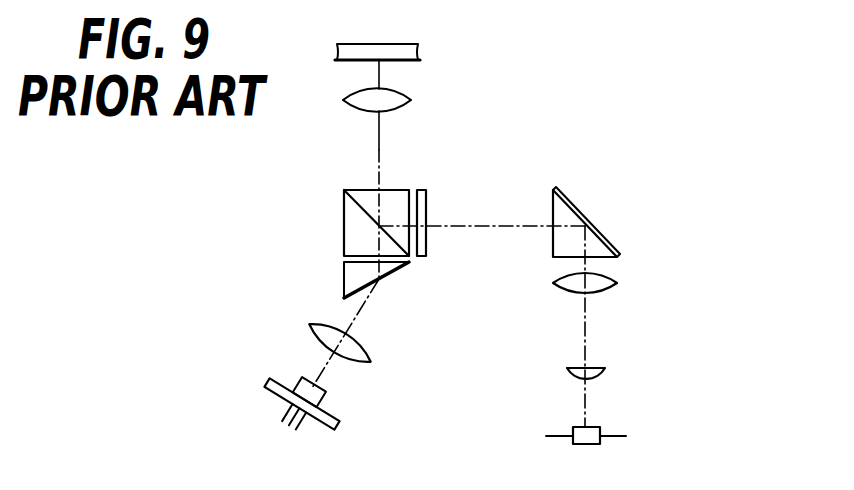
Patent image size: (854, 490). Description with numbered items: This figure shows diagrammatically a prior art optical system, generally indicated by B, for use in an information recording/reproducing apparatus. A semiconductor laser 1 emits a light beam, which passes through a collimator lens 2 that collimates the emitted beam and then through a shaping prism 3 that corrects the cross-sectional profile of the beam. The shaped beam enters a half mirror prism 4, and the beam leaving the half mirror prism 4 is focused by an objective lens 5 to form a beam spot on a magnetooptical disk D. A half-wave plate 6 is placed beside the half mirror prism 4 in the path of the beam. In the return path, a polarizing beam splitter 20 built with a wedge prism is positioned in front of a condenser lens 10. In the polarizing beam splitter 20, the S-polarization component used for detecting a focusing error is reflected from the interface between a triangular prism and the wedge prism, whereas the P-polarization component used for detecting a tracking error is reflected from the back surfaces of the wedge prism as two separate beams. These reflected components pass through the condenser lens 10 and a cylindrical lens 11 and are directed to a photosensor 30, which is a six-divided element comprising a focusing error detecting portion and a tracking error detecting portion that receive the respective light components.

The magnetooptical disk D is at (405, 52).
The objective lens 5 is at (393, 97).
The optical system B is at (362, 205).
The half mirror prism 4 is at (355, 233).
The half-wave plate 6 is at (421, 210).
The shaping prism 3 is at (355, 277).
The collimator lens 2 is at (352, 353).
The semiconductor laser 1 is at (315, 398).
The polarizing beam splitter 20 is at (563, 215).
The condenser lens 10 is at (605, 285).
The cylindrical lens 11 is at (597, 370).
The photosensor 30 is at (598, 433).